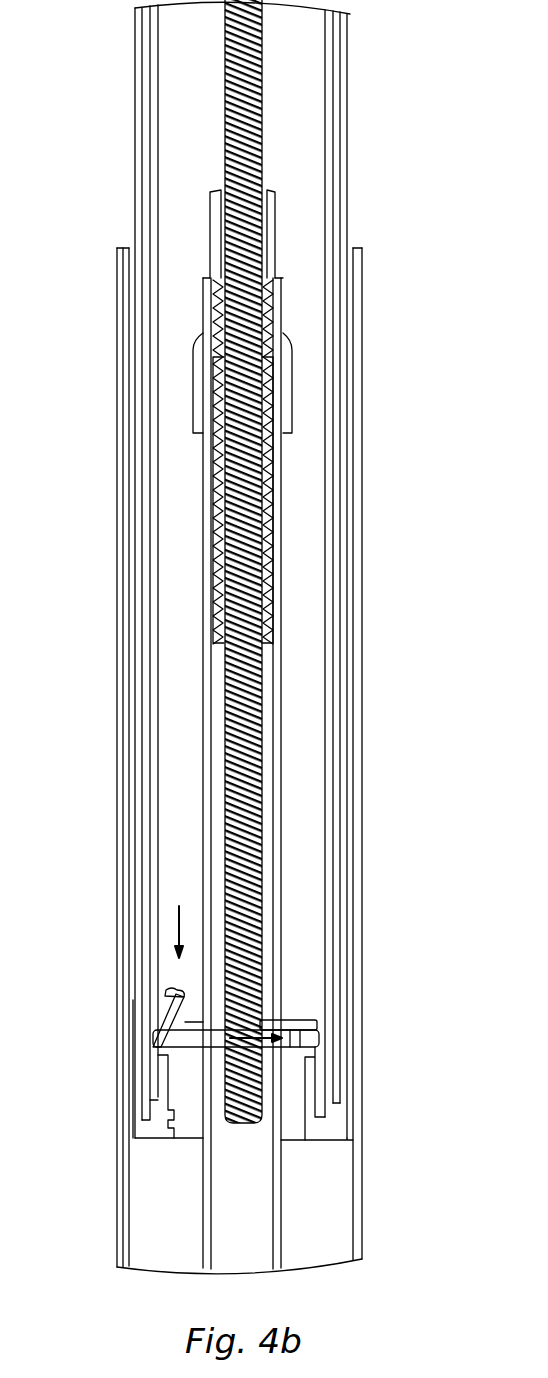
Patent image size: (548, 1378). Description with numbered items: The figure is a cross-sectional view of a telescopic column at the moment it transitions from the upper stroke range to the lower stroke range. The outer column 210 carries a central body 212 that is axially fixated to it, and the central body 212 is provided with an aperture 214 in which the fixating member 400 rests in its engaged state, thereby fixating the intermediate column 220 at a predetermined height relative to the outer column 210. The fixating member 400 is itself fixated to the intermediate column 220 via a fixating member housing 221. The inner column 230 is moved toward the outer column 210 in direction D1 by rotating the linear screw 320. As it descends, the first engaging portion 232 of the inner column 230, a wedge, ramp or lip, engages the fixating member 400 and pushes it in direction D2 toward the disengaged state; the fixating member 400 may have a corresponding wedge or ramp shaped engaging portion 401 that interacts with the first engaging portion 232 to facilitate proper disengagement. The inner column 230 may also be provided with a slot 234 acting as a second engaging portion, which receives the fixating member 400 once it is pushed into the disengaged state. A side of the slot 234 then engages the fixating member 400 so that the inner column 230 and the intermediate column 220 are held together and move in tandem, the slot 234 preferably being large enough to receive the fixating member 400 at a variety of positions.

The outer column 210 is at (117, 1232).
The central body 212 is at (205, 1180).
The aperture 214 is at (274, 1008).
The intermediate column 220 is at (135, 1092).
The fixating member housing 221 is at (353, 1138).
The inner column 230 is at (156, 26).
The first engaging portion 232 is at (168, 988).
The slot 234 is at (323, 1013).
The linear screw 320 is at (226, 71).
The fixating member 400 is at (319, 1039).
The engaging portion 401 is at (160, 1027).
The direction D1 is at (176, 922).
The direction D2 is at (268, 1043).